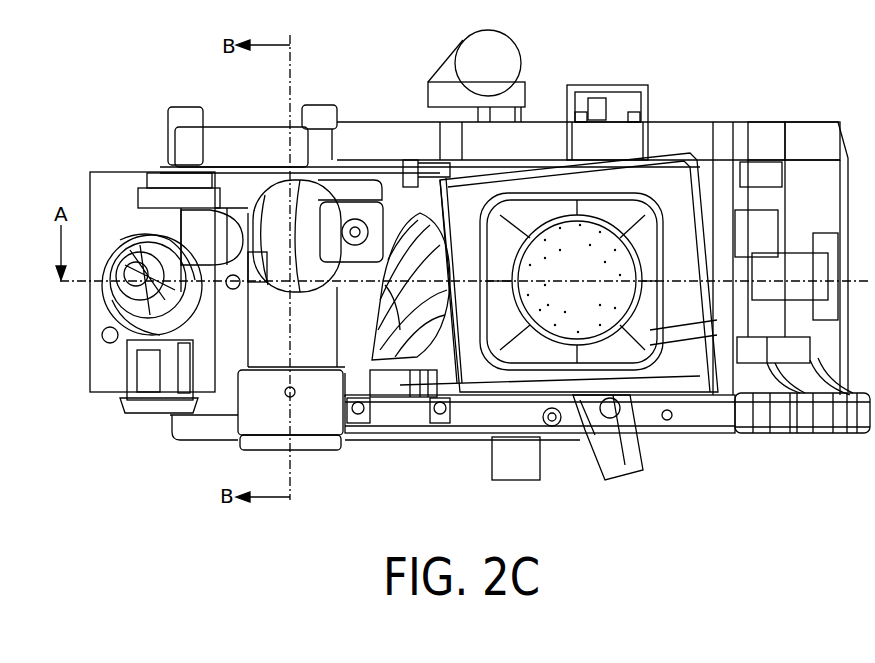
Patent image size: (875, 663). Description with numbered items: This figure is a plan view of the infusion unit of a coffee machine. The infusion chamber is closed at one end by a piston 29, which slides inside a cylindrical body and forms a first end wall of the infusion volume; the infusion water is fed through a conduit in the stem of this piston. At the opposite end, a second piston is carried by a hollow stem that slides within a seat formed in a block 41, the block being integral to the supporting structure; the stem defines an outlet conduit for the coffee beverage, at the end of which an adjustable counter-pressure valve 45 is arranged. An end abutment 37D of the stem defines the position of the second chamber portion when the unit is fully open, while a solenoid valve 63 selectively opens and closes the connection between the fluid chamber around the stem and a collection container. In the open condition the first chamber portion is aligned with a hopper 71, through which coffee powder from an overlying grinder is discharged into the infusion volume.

The piston 29 is at (590, 296).
The block 41 is at (110, 172).
The adjustable counter-pressure valve 45 is at (92, 310).
The solenoid valve 63 is at (283, 207).
The hopper 71 is at (614, 192).
The end abutment 37D is at (198, 297).